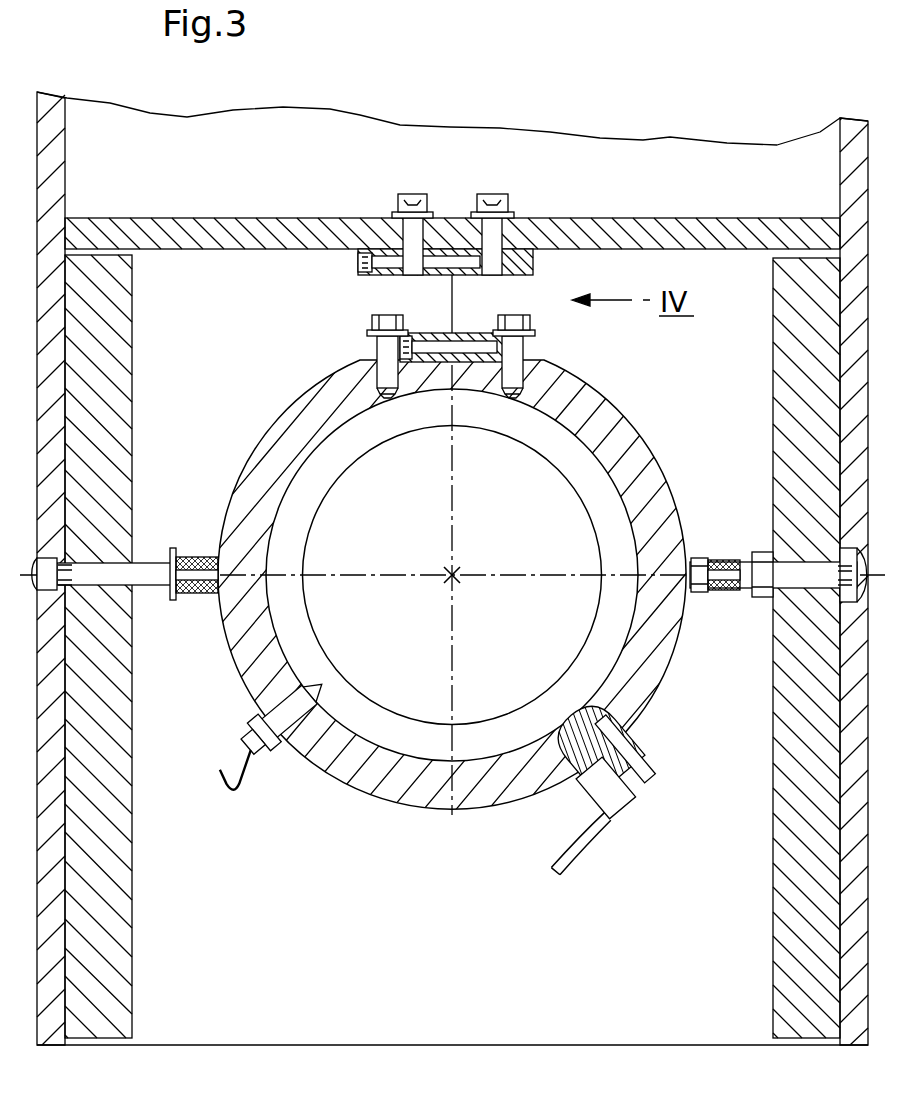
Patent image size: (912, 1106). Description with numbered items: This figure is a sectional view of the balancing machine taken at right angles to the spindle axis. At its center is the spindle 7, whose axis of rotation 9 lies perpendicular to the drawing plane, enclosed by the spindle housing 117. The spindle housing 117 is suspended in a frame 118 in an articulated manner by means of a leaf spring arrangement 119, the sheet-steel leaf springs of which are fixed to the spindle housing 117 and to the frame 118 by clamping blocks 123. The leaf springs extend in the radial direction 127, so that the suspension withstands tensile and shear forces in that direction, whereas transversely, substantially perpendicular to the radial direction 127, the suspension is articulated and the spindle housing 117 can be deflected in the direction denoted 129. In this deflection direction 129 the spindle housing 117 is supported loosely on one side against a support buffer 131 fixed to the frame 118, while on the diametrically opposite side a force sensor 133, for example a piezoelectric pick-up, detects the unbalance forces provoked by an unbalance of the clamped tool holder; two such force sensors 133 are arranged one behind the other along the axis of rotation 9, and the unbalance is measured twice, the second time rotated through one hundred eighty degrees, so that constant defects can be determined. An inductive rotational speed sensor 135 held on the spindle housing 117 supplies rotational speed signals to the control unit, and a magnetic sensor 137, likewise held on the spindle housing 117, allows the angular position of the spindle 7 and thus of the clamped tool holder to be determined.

The spindle 7 is at (345, 470).
The axis of rotation 9 is at (458, 580).
The spindle housing 117 is at (385, 806).
The frame 118 is at (132, 978).
The leaf spring arrangement 119 is at (447, 299).
The clamping blocks 123 is at (540, 258).
The radial direction 127 is at (453, 487).
The deflection direction 129 is at (350, 576).
The support buffer 131 is at (193, 600).
The force sensor 133 is at (700, 596).
The inductive rotational speed sensor 135 is at (272, 766).
The magnetic sensor 137 is at (645, 793).